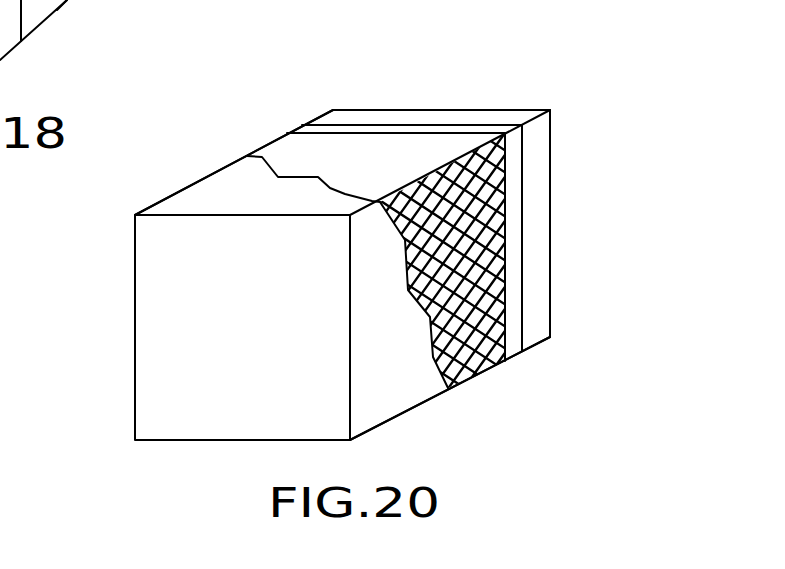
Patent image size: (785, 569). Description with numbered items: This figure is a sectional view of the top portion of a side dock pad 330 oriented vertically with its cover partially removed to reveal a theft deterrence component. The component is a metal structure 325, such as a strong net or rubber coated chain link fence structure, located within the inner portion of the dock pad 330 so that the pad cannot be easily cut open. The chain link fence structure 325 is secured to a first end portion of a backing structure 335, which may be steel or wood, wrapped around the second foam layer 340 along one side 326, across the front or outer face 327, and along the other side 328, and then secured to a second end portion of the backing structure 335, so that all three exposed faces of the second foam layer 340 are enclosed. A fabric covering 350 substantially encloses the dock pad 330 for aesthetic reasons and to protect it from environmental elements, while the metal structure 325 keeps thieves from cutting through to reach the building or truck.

The other side 328 is at (115, 366).
The front or outer face 327 is at (212, 373).
The one side 326 is at (392, 392).
The dock pad 330 is at (434, 76).
The backing structure 335 is at (515, 323).
The metal structure 325 is at (477, 343).
The second foam layer 340 is at (310, 158).
The fabric covering 350 is at (208, 188).